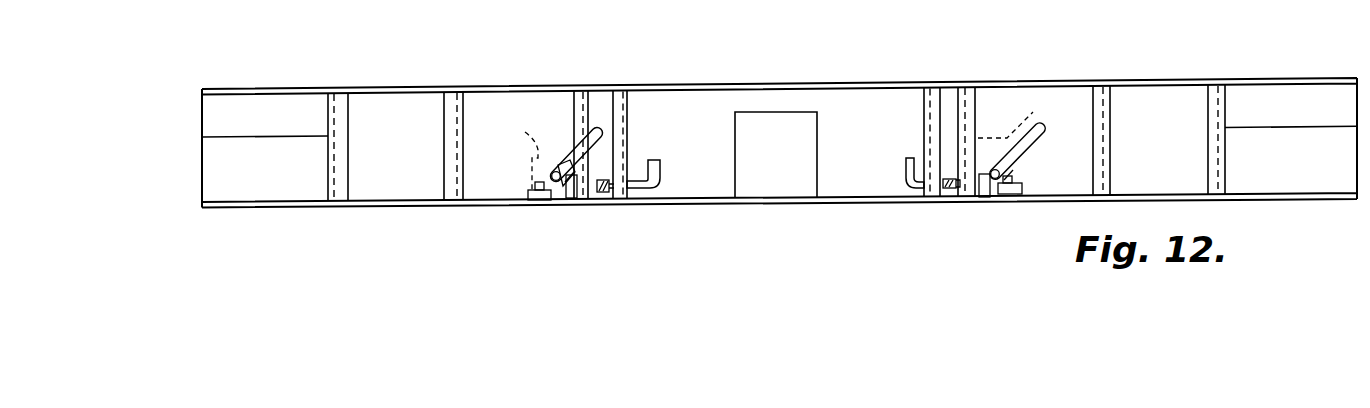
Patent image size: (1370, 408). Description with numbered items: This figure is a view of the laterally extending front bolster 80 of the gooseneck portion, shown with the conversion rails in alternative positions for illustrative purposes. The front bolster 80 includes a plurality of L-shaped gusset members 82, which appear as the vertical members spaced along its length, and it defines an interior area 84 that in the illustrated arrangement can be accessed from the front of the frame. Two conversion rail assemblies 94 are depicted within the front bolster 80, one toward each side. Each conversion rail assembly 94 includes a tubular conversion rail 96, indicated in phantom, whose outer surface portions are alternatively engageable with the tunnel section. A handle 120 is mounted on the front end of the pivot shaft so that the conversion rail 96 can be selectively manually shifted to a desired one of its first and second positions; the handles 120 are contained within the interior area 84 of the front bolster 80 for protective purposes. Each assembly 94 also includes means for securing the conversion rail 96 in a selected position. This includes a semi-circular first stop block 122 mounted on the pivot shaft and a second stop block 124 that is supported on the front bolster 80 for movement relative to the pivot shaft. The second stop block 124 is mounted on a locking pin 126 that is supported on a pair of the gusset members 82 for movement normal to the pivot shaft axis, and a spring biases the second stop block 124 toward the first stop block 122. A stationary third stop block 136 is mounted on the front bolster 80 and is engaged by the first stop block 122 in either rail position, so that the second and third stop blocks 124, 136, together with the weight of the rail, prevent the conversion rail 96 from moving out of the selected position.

The front bolster 80 is at (385, 80).
The gusset members 82 is at (350, 152).
The interior area 84 is at (716, 105).
The conversion rail assembly 94 is at (547, 215).
The conversion rail 96 is at (782, 142).
The handle 120 is at (578, 165).
The first stop block 122 is at (563, 192).
The second stop block 124 is at (580, 198).
The locking pin 126 is at (660, 172).
The third stop block 136 is at (534, 203).